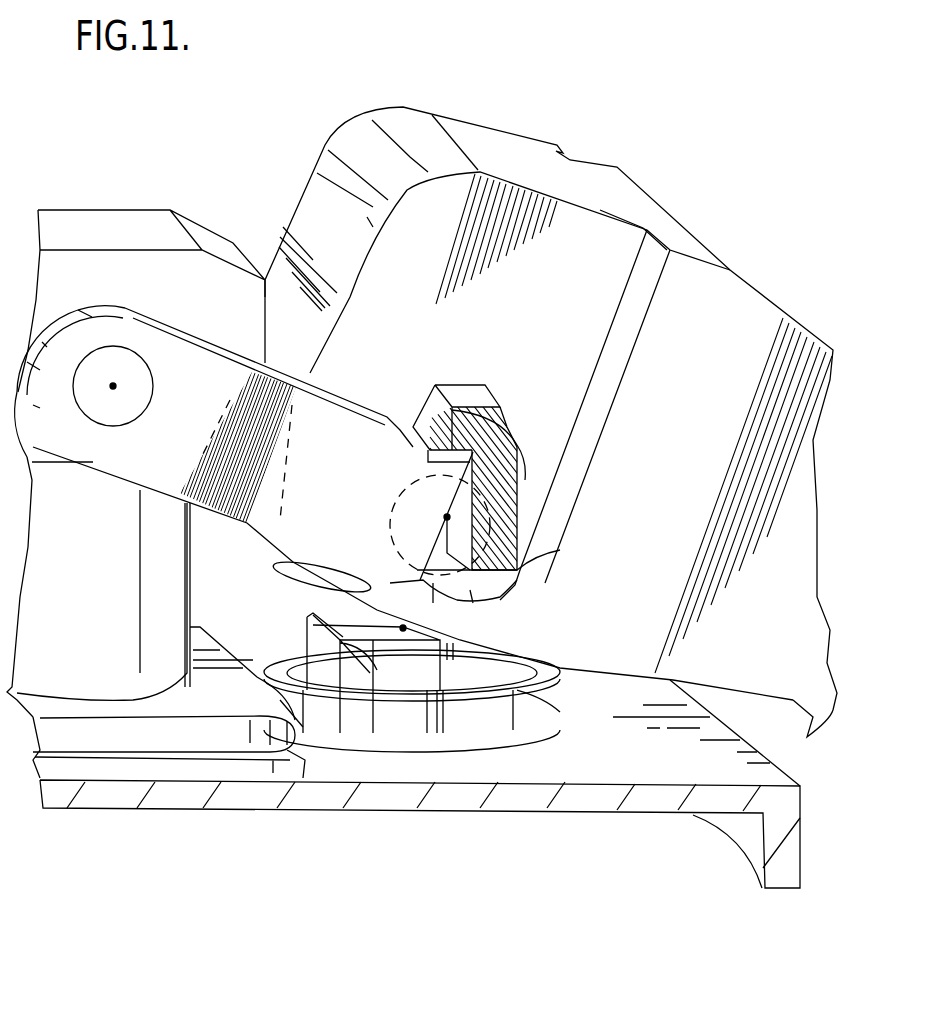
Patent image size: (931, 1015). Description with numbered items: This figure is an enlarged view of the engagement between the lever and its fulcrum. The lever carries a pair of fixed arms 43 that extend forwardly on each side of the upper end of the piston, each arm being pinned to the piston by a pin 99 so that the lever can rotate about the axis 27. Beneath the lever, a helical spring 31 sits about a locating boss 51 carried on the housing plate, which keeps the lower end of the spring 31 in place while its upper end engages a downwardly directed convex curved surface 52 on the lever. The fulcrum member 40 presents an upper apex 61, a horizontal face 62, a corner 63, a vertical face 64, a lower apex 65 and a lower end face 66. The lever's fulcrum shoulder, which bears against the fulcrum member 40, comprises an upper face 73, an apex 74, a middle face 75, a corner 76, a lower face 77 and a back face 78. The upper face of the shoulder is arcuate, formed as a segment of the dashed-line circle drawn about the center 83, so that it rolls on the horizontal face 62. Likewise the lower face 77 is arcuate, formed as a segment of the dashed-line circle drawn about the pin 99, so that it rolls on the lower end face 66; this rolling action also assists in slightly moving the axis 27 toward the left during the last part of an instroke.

The axis 27 is at (115, 388).
The spring 31 is at (540, 712).
The fulcrum member 40 is at (501, 464).
The fixed arms 43 is at (382, 380).
The locating boss 51 is at (477, 713).
The curved surface 52 is at (520, 657).
The upper apex 61 is at (433, 455).
The horizontal face 62 is at (470, 450).
The corner 63 is at (595, 425).
The vertical face 64 is at (523, 510).
The lower apex 65 is at (560, 550).
The lower end face 66 is at (500, 587).
The upper face 73 is at (425, 470).
The apex 74 is at (518, 470).
The middle face 75 is at (468, 480).
The corner 76 is at (285, 565).
The lower face 77 is at (318, 606).
The back face 78 is at (627, 305).
The center 83 is at (467, 537).
The pin 99 is at (150, 375).